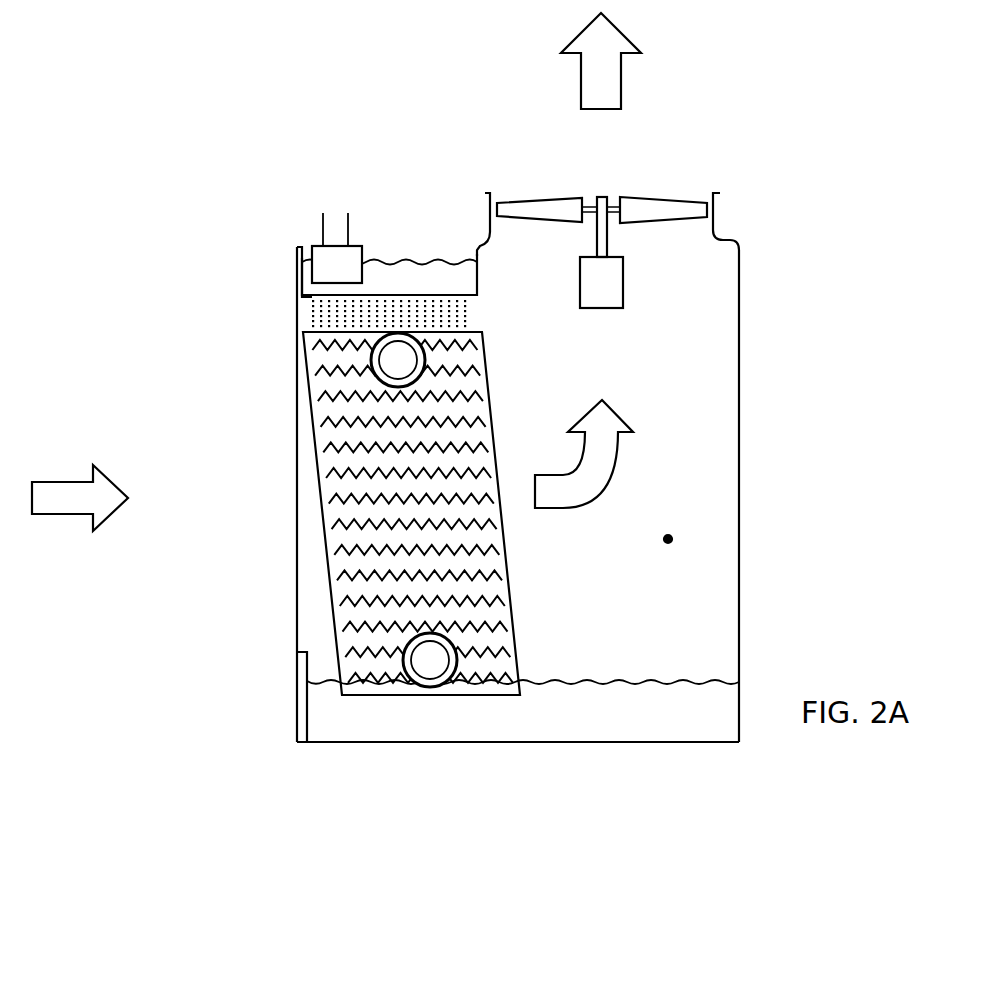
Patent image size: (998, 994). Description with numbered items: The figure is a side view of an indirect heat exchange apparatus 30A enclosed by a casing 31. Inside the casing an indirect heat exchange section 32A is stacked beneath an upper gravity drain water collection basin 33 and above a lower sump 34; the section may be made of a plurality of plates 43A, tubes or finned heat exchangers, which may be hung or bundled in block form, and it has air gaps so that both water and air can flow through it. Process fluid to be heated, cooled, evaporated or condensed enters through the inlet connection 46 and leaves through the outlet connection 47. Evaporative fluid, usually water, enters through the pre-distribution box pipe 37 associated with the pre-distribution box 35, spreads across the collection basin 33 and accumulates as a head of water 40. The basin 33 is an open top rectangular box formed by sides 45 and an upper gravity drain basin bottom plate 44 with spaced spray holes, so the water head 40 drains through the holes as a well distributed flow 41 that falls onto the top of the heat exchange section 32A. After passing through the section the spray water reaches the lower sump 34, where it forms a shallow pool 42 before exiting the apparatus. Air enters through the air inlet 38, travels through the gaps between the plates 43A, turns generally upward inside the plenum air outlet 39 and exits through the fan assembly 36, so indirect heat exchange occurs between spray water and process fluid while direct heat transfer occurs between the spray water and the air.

The indirect heat exchange apparatus 30A is at (845, 190).
The casing 31 is at (739, 413).
The indirect heat exchange section 32A is at (318, 458).
The upper gravity drain water collection basin 33 is at (477, 280).
The lower sump 34 is at (470, 742).
The pre-distribution box 35 is at (317, 247).
The fan assembly 36 is at (677, 198).
The pre-distribution box pipe 37 is at (350, 230).
The air inlet 38 is at (297, 592).
The plenum air outlet 39 is at (668, 539).
The head of water 40 is at (418, 260).
The well distributed flow 41 is at (303, 328).
The shallow pool 42 is at (602, 685).
The plates 43A is at (333, 525).
The upper gravity drain basin bottom plate 44 is at (297, 310).
The sides 45 is at (300, 272).
The indirect heat exchange inlet connection 46 is at (372, 352).
The indirect heat exchange outlet connection 47 is at (408, 677).